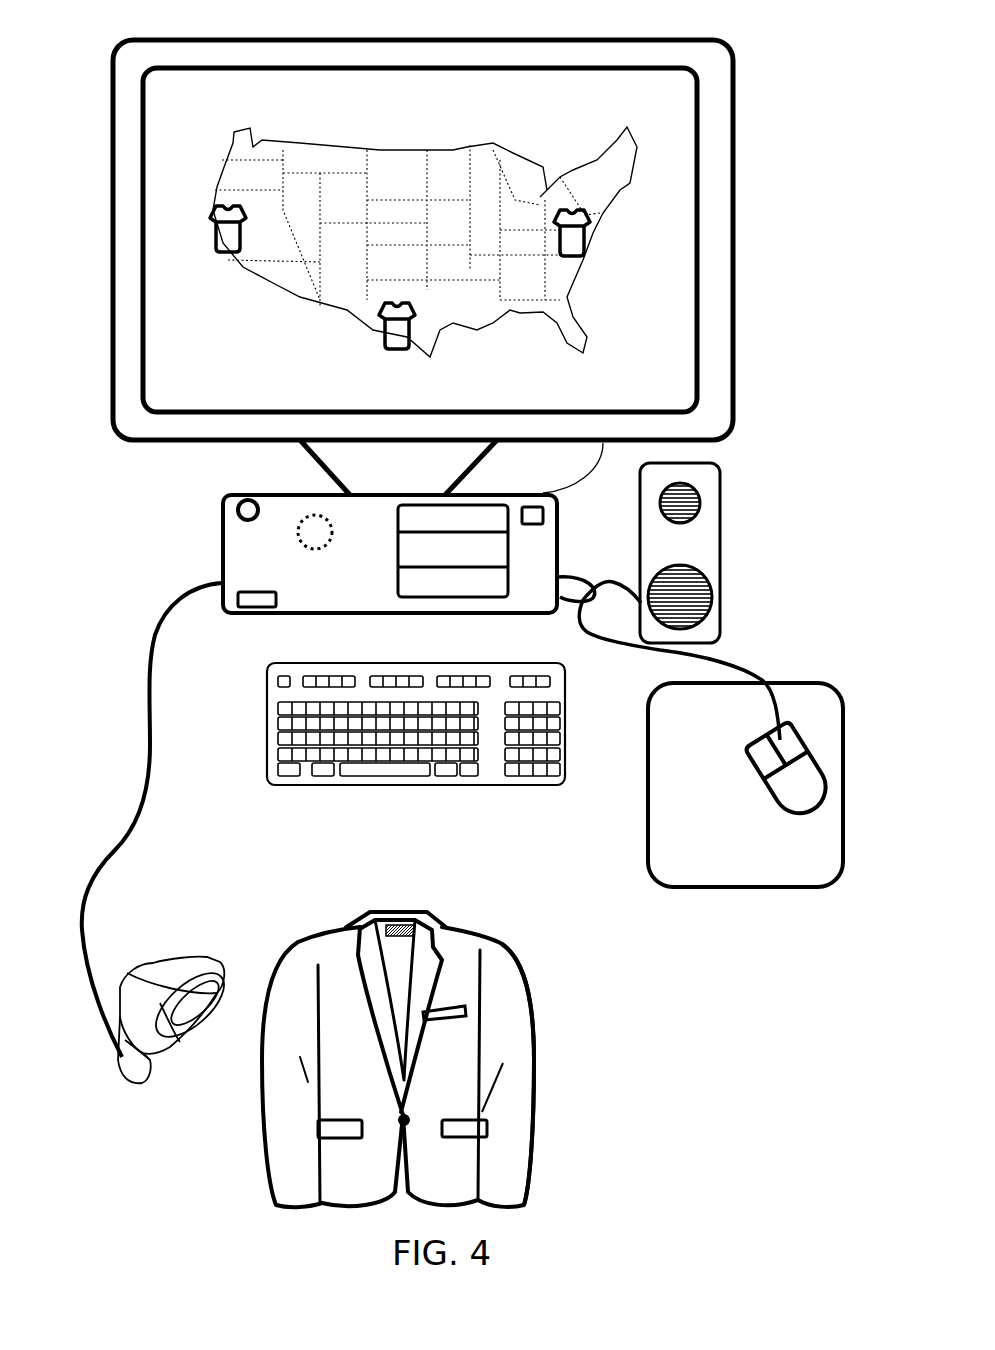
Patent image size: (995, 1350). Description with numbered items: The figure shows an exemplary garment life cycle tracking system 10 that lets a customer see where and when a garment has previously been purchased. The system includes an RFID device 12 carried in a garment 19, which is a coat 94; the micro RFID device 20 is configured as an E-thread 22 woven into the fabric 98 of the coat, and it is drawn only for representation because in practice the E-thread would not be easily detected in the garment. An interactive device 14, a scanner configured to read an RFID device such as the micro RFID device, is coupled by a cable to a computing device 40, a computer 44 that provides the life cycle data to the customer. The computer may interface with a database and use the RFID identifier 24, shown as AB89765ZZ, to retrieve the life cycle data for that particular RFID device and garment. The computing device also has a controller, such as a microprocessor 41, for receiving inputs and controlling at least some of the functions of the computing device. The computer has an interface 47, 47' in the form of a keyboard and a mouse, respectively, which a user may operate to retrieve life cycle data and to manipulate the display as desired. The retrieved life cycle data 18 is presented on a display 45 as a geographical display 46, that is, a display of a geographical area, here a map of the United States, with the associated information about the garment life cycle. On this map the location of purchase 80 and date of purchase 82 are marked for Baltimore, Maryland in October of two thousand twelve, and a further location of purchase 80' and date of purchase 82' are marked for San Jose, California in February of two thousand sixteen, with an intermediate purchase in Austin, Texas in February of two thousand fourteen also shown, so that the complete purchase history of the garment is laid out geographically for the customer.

The garment life cycle tracking system 10 is at (760, 435).
The RFID device 12 is at (408, 918).
The interactive device 14 is at (178, 975).
The life cycle data 18 is at (213, 143).
The garment 19 is at (435, 948).
The micro RFID device 20 is at (470, 1123).
The E-thread 22 is at (462, 1133).
The RFID identifier 24 is at (190, 875).
The computing device 40 is at (243, 570).
The microprocessor 41 is at (298, 537).
The computer 44 is at (260, 552).
The display 45 is at (525, 150).
The geographical display 46 is at (300, 253).
The keyboard 47 is at (416, 760).
The mouse 47' is at (745, 831).
The location of purchase 80 is at (537, 296).
The location of purchase 80' is at (149, 207).
The date of purchase 82 is at (706, 219).
The date of purchase 82' is at (135, 294).
The coat 94 is at (508, 1022).
The fabric 98 is at (460, 985).